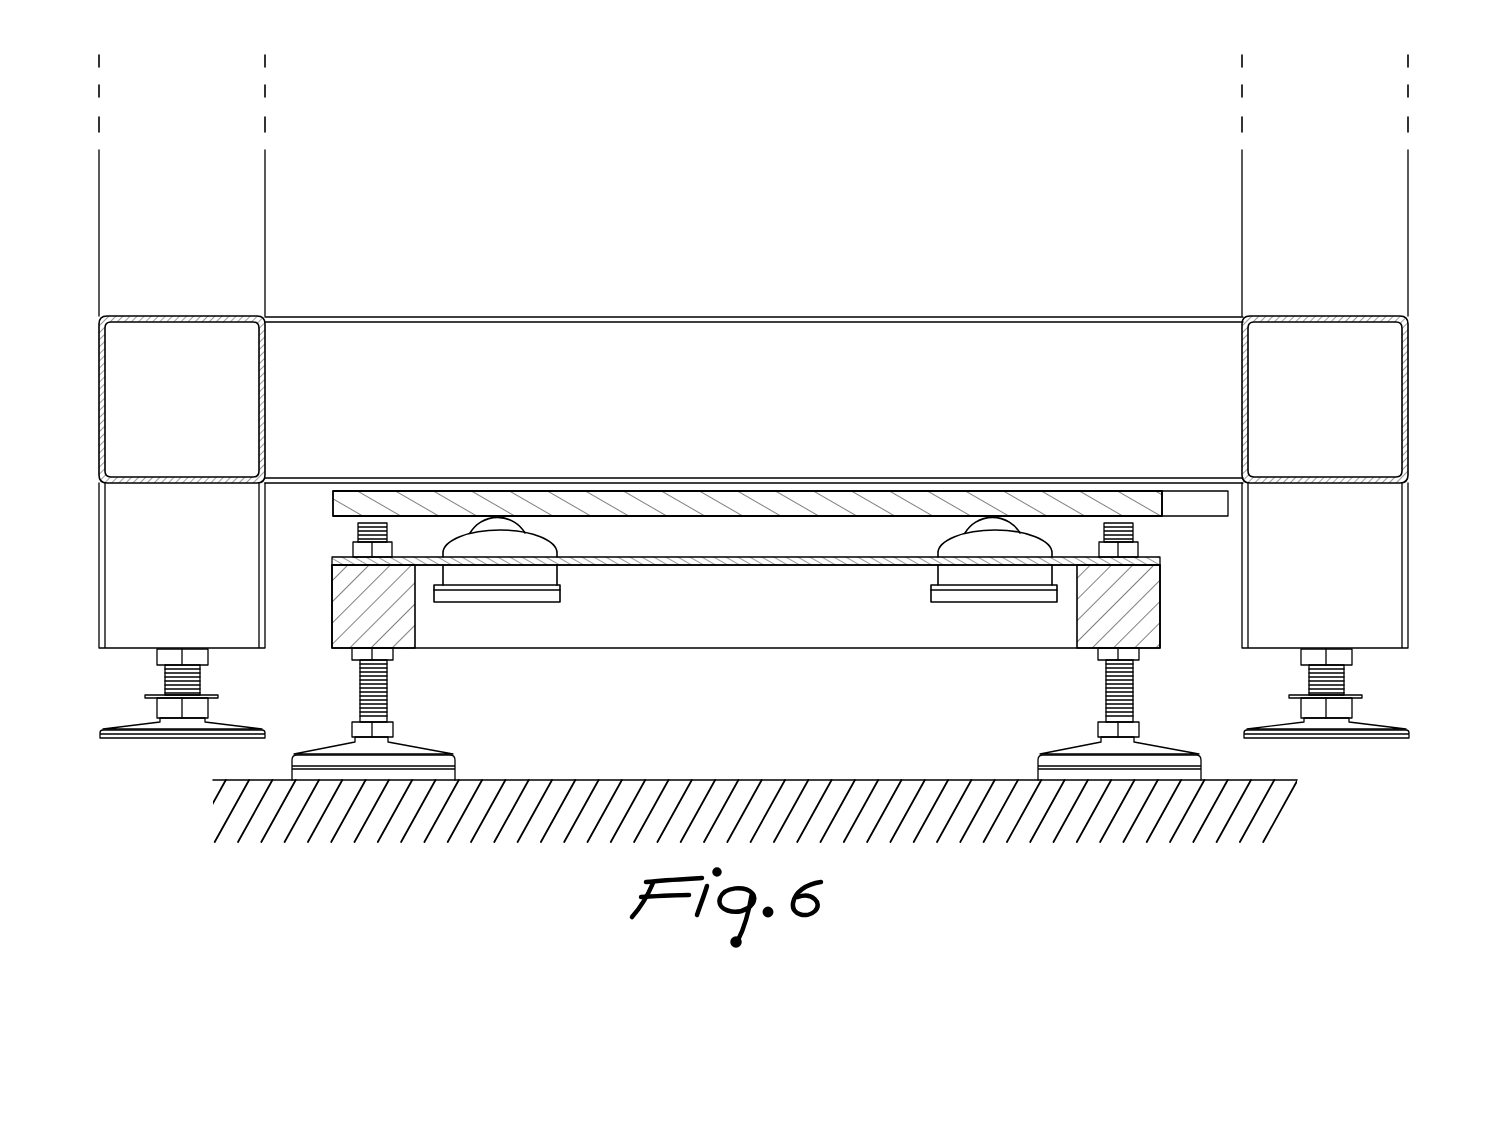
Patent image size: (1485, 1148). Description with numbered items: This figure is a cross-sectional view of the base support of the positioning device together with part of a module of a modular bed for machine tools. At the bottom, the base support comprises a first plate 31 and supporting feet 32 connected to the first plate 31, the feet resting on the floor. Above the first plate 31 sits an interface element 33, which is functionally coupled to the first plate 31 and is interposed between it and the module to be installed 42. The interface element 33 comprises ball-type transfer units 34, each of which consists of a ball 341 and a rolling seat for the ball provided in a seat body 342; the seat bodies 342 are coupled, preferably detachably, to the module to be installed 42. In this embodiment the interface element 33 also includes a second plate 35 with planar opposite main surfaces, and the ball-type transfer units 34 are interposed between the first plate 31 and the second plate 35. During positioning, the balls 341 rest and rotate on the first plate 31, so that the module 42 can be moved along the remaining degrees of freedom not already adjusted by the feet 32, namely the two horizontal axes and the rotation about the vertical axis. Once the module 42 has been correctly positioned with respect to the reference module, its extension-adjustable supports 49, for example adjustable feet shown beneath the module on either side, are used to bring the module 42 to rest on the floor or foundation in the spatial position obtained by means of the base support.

The first plate 31 is at (656, 567).
The supporting feet 32 is at (378, 730).
The interface element 33 is at (440, 533).
The ball-type transfer unit 34 is at (549, 612).
The second plate 35 is at (775, 520).
The module to be installed 42 is at (1412, 450).
The adjustable supports 49 is at (181, 695).
The ball 341 is at (498, 526).
The seat body 342 is at (508, 573).